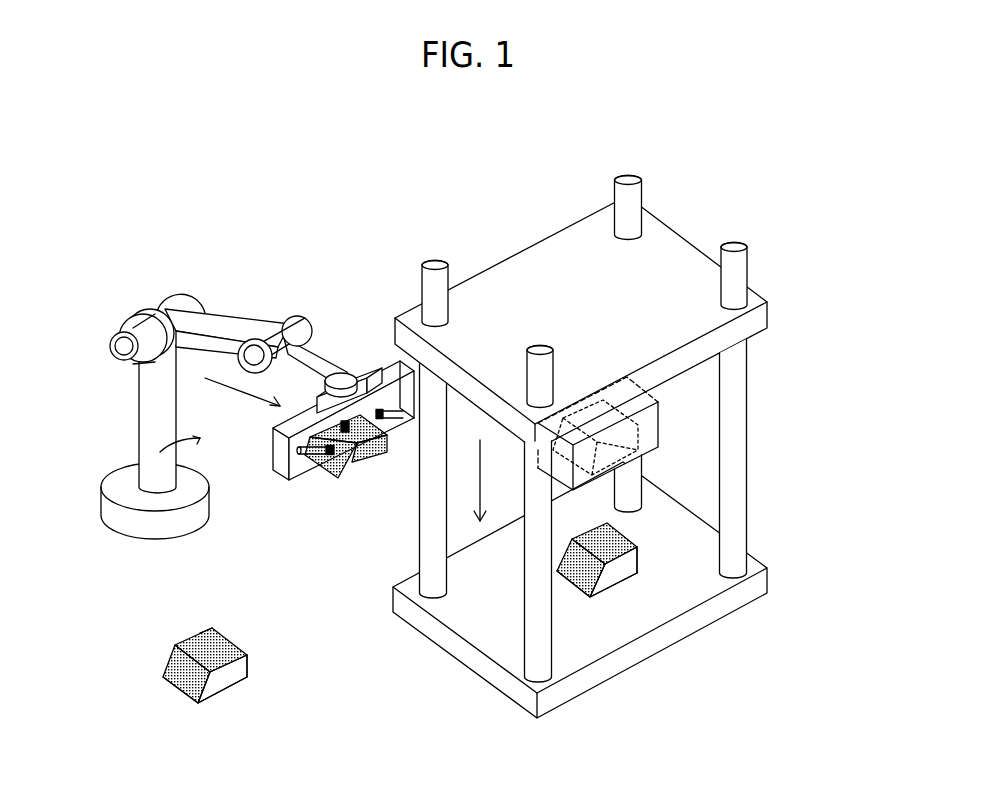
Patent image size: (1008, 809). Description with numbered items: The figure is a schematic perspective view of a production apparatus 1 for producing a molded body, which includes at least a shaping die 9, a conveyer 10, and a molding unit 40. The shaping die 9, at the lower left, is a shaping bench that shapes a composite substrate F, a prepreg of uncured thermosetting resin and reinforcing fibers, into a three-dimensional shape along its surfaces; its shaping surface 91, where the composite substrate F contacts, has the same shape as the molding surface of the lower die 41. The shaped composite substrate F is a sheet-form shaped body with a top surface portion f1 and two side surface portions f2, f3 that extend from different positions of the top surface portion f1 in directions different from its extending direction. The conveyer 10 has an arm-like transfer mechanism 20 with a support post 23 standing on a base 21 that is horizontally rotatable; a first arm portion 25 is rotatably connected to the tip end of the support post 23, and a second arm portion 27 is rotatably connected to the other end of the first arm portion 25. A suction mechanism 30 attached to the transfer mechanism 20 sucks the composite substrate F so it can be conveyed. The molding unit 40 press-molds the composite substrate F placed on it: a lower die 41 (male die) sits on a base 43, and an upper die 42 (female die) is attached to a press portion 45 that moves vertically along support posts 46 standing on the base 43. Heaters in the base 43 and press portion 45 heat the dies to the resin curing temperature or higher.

The production apparatus 1 is at (495, 170).
The conveyer 10 is at (301, 264).
The arm-like transfer mechanism 20 is at (188, 293).
The base 21 is at (165, 537).
The support post 23 is at (142, 420).
The first arm portion 25 is at (218, 322).
The second arm portion 27 is at (320, 362).
The suction mechanism 30 is at (283, 463).
The molding unit 40 is at (779, 219).
The lower die 41 is at (627, 570).
The upper die 42 is at (653, 432).
The base 43 is at (667, 638).
The press portion 45 is at (758, 323).
The support posts 46 is at (740, 498).
The shaping die 9 is at (225, 680).
The shaping surface 91 is at (200, 633).
The composite substrate F is at (178, 687).
The top surface portion f1 is at (220, 645).
The side surface portion f2 is at (175, 657).
The side surface portion f3 is at (250, 660).